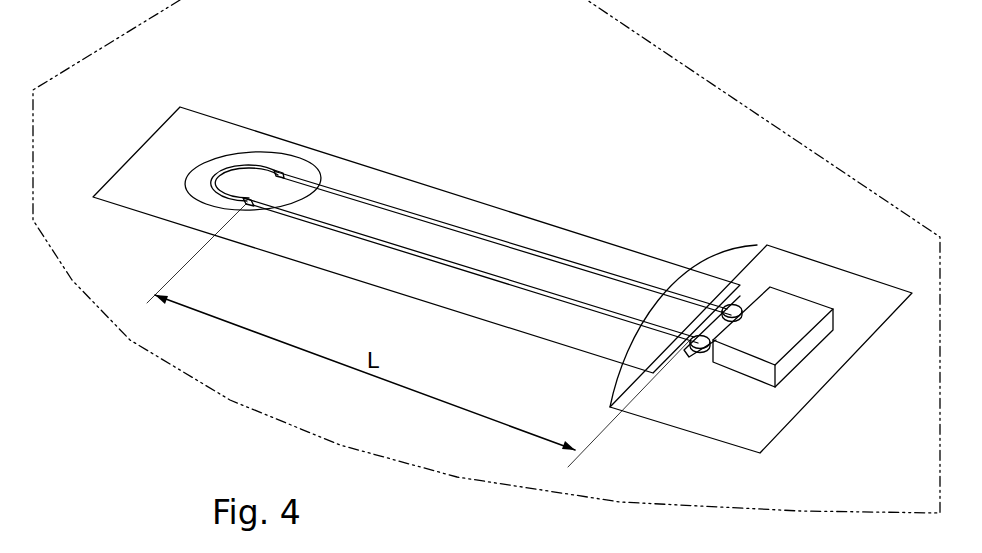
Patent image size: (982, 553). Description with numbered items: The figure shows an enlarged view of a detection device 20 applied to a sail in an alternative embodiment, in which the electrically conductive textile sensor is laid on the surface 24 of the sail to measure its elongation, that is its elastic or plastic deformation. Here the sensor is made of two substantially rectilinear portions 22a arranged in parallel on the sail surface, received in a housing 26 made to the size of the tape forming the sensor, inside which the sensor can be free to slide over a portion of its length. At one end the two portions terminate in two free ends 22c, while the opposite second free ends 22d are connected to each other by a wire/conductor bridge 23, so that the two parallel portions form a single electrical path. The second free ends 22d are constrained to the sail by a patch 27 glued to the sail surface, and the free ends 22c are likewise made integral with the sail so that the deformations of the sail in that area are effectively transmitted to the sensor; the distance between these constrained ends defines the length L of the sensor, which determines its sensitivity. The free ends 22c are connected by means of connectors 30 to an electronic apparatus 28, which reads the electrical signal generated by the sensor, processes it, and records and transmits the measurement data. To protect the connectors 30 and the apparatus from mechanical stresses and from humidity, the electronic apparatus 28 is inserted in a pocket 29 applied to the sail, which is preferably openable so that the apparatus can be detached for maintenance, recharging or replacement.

The detection device 20 is at (385, 160).
The rectilinear portions 22a is at (563, 263).
The free ends 22c is at (717, 307).
The second free ends 22d is at (286, 170).
The wire/conductor bridge 23 is at (237, 168).
The surface of the sail 24 is at (268, 382).
The housing 26 is at (468, 213).
The patch 27 is at (205, 178).
The electronic apparatus 28 is at (787, 307).
The pocket 29 is at (743, 417).
The connectors 30 is at (732, 303).